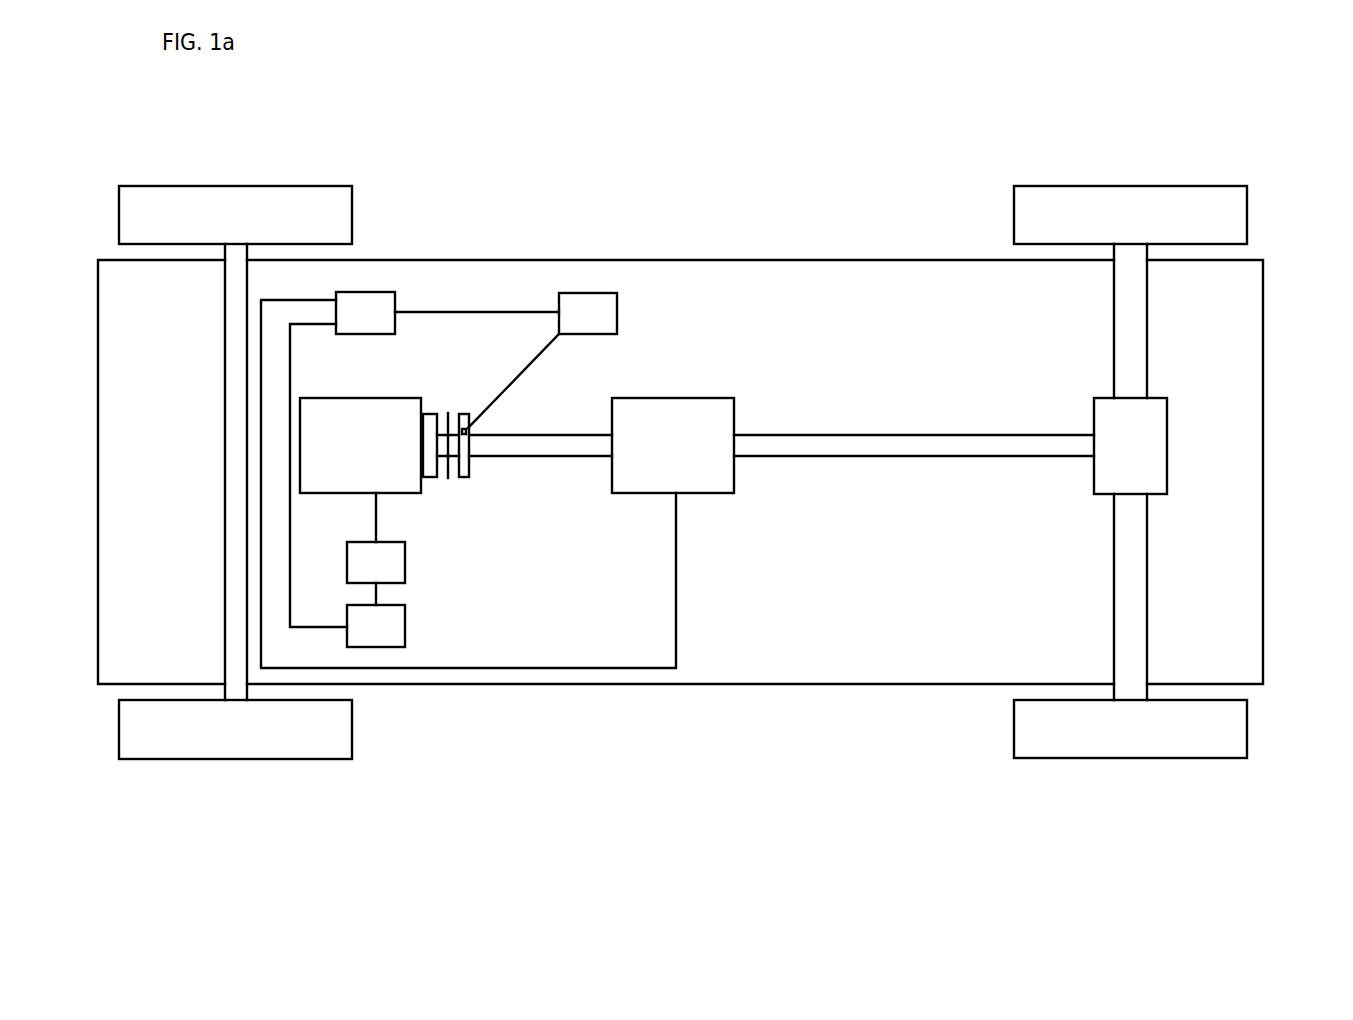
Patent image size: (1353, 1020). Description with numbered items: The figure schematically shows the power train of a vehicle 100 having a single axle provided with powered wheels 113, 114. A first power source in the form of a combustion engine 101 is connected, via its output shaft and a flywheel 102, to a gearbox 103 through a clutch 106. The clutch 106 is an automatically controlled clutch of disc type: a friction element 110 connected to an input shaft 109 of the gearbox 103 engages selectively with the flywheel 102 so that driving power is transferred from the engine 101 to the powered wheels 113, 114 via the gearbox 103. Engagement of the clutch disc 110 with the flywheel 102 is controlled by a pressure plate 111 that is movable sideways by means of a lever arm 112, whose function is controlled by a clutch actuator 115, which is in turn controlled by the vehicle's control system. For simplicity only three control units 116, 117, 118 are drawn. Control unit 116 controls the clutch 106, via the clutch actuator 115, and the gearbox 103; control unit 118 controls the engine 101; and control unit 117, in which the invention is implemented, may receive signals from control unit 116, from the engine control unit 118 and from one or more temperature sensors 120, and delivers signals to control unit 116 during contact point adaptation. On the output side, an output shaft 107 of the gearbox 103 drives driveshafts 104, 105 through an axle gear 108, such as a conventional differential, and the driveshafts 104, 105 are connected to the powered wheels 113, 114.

The vehicle 100 is at (578, 92).
The combustion engine 101 is at (330, 482).
The flywheel 102 is at (423, 428).
The gearbox 103 is at (673, 408).
The driveshaft 104 is at (1135, 318).
The driveshaft 105 is at (1142, 604).
The clutch 106 is at (462, 484).
The output shaft 107 is at (1010, 449).
The axle gear 108 is at (1162, 441).
The input shaft 109 is at (580, 447).
The friction element 110 is at (452, 480).
The pressure plate 111 is at (468, 470).
The lever arm 112 is at (532, 359).
The powered wheel 113 is at (1242, 208).
The powered wheel 114 is at (1242, 732).
The clutch actuator 115 is at (612, 307).
The control unit 116 is at (350, 330).
The control unit 117 is at (376, 626).
The engine control unit 118 is at (376, 562).
The temperature sensor 120 is at (470, 427).